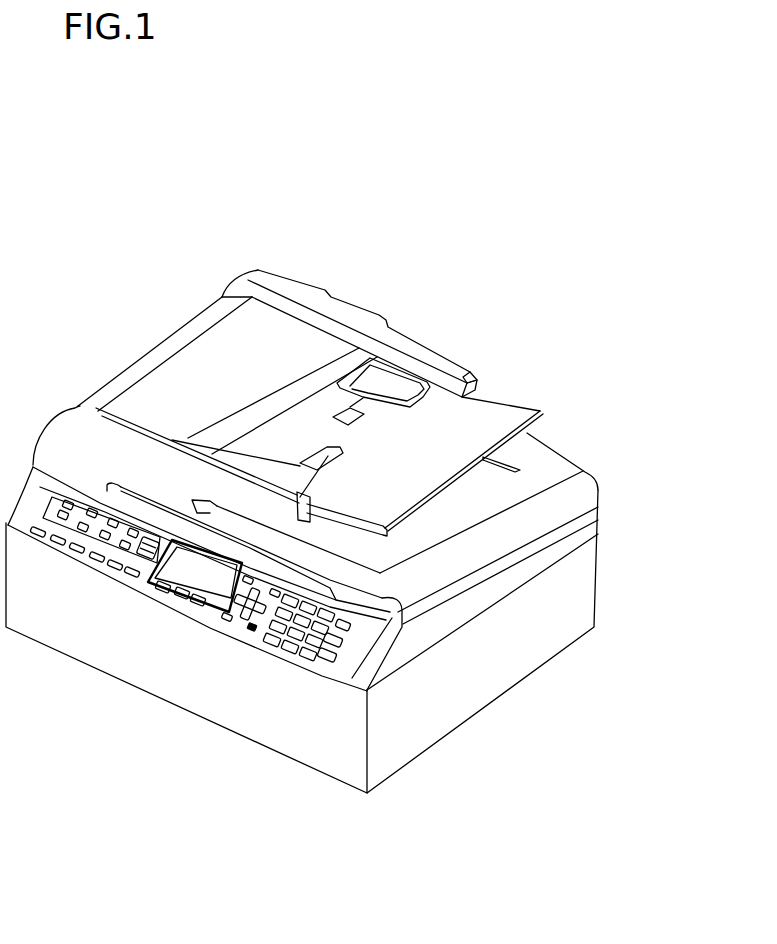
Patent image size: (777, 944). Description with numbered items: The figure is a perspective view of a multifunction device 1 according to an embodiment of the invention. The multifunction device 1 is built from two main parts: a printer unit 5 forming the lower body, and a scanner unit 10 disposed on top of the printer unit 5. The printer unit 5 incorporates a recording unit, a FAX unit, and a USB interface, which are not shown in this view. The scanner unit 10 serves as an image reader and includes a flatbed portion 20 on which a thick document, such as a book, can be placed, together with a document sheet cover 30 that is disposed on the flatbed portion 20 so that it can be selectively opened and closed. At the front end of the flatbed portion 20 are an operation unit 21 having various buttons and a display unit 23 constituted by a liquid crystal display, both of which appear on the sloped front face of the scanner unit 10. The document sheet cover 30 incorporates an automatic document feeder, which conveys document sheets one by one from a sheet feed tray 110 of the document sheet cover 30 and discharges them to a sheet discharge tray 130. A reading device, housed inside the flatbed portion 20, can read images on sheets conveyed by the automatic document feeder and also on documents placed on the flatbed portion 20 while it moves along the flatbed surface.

The multifunction device 1 is at (676, 250).
The printer unit 5 is at (517, 680).
The scanner unit 10 is at (581, 291).
The flatbed portion 20 is at (443, 622).
The operation unit 21 is at (255, 632).
The display unit 23 is at (200, 577).
The document sheet cover 30 is at (283, 282).
The sheet feed tray 110 is at (503, 409).
The sheet discharge tray 130 is at (475, 485).